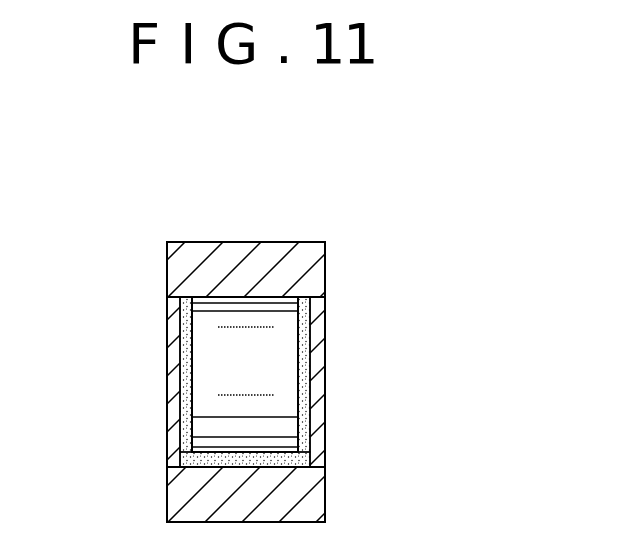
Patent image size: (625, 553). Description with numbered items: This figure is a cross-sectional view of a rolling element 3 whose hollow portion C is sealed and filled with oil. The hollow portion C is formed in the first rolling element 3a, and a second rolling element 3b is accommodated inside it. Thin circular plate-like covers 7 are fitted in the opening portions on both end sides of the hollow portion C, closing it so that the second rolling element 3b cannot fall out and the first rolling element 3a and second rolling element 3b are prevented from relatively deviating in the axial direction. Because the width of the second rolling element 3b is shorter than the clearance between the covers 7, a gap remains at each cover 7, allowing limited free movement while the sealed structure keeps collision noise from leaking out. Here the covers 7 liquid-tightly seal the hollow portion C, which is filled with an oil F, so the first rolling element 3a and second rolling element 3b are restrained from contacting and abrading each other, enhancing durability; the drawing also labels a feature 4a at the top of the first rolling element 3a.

The rolling element 3 is at (350, 232).
The first rolling element 3a is at (192, 260).
The second rolling element 3b is at (288, 377).
The inner liner 4a is at (245, 305).
The cover 7 is at (326, 333).
The hollow portion C is at (305, 458).
The oil F is at (190, 452).